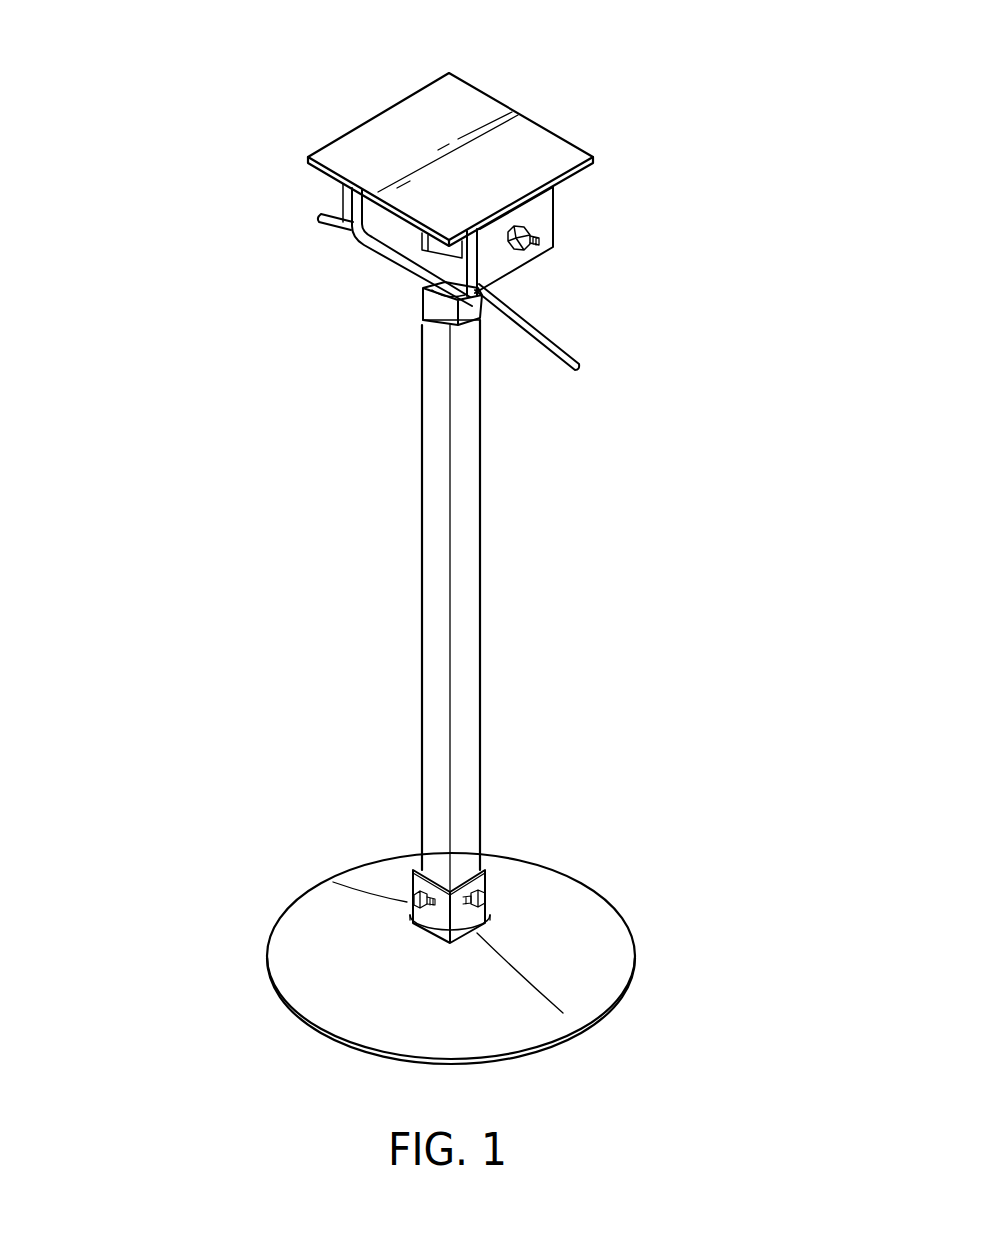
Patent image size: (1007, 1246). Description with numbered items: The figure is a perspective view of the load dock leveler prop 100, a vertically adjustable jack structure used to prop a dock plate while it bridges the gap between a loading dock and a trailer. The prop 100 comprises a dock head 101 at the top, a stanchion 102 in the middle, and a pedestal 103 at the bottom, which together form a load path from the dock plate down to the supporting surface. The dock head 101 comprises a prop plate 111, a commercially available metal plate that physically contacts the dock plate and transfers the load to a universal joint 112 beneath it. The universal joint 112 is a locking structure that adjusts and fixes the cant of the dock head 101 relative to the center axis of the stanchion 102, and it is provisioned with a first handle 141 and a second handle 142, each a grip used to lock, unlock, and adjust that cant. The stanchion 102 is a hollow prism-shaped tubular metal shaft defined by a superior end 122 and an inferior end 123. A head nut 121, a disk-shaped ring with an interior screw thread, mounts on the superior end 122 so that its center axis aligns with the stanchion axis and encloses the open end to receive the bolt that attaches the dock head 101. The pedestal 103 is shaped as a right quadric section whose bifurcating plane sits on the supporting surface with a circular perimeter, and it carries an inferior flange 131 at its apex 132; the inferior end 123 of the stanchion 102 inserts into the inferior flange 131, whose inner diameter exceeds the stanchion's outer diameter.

The load dock leveler prop 100 is at (128, 72).
The dock head 101 is at (568, 137).
The stanchion 102 is at (465, 705).
The pedestal 103 is at (573, 930).
The prop plate 111 is at (487, 128).
The universal joint 112 is at (542, 217).
The head nut 121 is at (424, 312).
The superior end 122 is at (478, 318).
The inferior end 123 is at (470, 870).
The inferior flange 131 is at (483, 885).
The apex 132 is at (612, 1013).
The first handle 141 is at (560, 340).
The second handle 142 is at (330, 220).